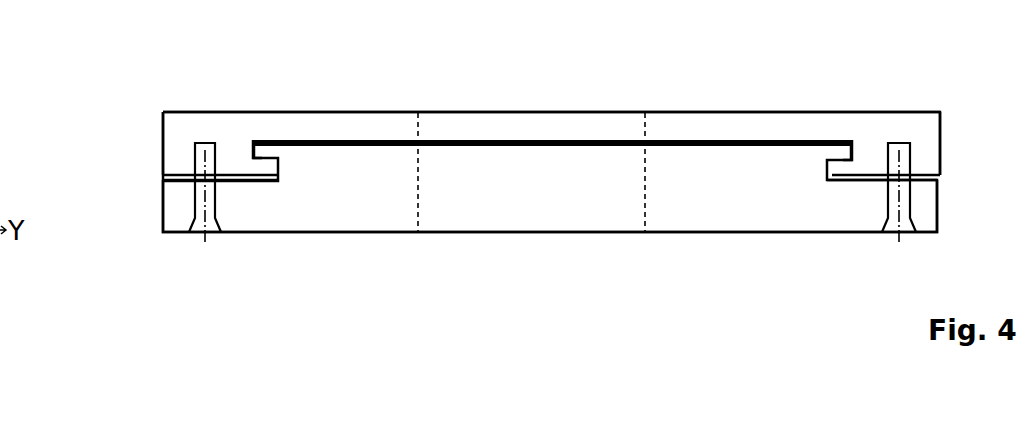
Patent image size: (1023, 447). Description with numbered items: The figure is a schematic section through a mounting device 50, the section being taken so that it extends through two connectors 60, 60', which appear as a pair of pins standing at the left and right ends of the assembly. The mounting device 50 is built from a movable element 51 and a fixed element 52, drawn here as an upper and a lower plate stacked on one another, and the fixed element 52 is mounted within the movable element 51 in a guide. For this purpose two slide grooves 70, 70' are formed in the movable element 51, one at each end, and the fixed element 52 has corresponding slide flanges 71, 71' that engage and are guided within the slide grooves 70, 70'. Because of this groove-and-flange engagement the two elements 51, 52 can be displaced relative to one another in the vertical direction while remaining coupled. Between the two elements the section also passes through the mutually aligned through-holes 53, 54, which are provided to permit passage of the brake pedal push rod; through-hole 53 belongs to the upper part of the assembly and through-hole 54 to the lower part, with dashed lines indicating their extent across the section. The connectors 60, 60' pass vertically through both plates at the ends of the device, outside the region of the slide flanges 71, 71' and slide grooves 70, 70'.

The mounting device 50 is at (118, 184).
The movable element 51 is at (370, 121).
The fixed element 52 is at (342, 213).
The through-hole 53 is at (552, 121).
The through-hole 54 is at (560, 213).
The connector 60 is at (170, 242).
The connector 60' is at (872, 242).
The slide groove 70 is at (210, 124).
The slide groove 70' is at (905, 122).
The slide flange 71 is at (247, 103).
The slide flange 71' is at (824, 103).